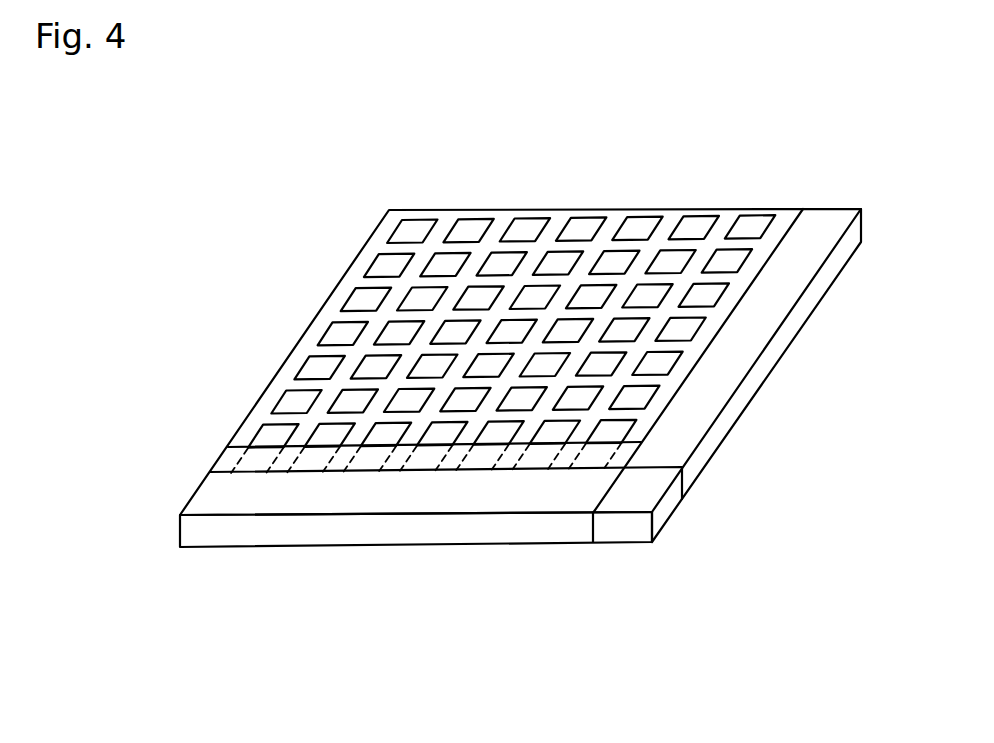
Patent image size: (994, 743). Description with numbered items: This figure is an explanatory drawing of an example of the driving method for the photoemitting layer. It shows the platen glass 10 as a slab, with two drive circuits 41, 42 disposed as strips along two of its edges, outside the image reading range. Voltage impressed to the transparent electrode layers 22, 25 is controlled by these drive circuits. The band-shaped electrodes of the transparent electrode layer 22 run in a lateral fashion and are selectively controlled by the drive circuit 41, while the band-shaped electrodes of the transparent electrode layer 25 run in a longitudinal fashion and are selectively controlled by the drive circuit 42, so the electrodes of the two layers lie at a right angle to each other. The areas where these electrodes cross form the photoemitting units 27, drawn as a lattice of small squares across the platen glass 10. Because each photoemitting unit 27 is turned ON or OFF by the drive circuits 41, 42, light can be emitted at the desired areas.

The platen glass 10 is at (716, 186).
The transparent electrode layer 22 is at (683, 363).
The transparent electrode layer 25 is at (248, 448).
The photoemitting unit 27 is at (313, 376).
The drive circuit 41 is at (792, 264).
The drive circuit 42 is at (214, 489).